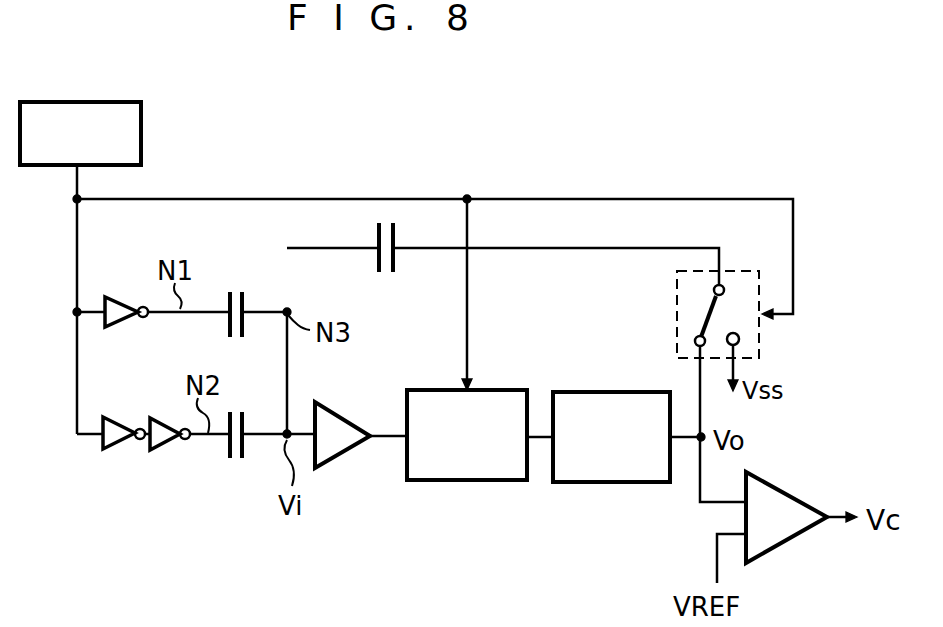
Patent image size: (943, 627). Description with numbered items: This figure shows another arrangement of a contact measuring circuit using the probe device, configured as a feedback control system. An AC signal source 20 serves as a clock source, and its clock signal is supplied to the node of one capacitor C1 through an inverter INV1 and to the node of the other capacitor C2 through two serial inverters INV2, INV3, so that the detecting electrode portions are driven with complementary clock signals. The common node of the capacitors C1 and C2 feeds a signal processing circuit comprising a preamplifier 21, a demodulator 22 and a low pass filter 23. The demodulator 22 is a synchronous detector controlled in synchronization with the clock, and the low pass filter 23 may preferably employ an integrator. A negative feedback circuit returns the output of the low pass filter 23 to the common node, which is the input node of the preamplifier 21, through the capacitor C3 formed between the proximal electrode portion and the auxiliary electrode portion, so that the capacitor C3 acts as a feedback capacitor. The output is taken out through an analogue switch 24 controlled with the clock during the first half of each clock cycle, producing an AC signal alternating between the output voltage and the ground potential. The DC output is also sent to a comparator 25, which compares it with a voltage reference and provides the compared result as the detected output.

The AC signal source 20 is at (141, 131).
The preamplifier 21 is at (345, 418).
The demodulator 22 is at (487, 390).
The low pass filter 23 is at (590, 392).
The analogue switch 24 is at (735, 271).
The comparator 25 is at (788, 492).
The capacitor C1 is at (234, 296).
The capacitor C2 is at (232, 456).
The feedback capacitor C3 is at (382, 267).
The inverter INV1 is at (115, 331).
The inverter INV2 is at (108, 451).
The inverter INV3 is at (167, 450).